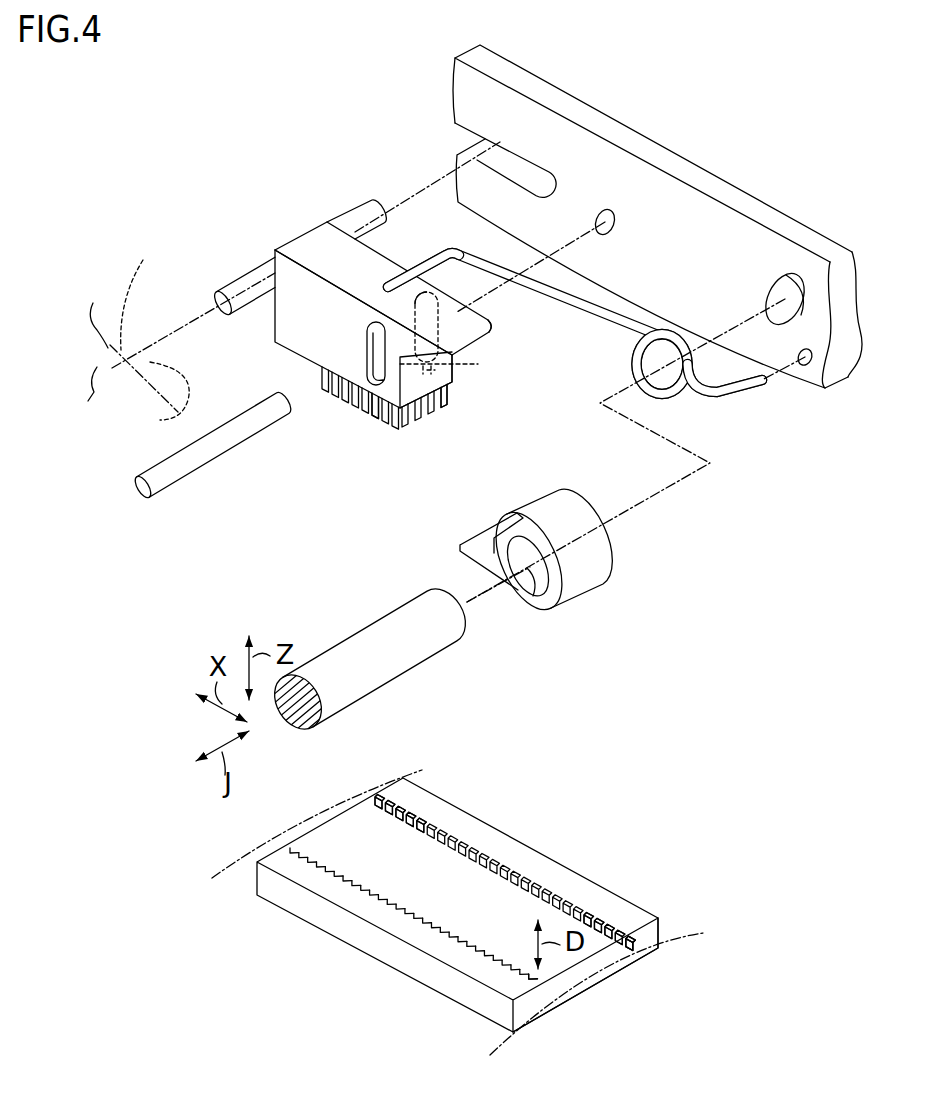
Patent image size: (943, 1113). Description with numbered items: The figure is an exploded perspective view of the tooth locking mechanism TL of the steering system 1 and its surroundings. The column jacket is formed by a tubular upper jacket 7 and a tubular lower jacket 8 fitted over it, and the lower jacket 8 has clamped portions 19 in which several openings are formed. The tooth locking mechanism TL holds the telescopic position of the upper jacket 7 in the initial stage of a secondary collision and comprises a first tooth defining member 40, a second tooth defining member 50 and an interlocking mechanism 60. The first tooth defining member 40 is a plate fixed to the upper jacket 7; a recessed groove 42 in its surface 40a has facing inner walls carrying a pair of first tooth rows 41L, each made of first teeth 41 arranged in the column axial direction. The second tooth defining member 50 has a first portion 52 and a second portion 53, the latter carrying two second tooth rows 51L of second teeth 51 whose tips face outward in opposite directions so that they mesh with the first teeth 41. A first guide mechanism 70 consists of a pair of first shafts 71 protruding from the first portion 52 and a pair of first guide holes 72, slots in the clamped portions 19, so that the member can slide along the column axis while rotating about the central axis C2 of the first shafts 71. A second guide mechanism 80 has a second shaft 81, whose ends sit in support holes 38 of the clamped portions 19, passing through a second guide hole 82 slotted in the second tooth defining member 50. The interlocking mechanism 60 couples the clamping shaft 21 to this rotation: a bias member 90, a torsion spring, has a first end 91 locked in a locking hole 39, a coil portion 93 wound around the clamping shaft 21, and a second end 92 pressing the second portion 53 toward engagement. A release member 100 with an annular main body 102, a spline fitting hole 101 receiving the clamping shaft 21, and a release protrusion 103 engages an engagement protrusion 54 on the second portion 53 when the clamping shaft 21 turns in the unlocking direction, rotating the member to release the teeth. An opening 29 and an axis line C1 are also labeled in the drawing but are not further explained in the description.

The steering system 1 is at (657, 211).
The lower jacket 8 is at (705, 146).
The clamped portions 19 is at (745, 189).
The support holes 38 is at (598, 218).
The hole 29 is at (767, 295).
The locking hole 39 is at (803, 367).
The first guide mechanism 70 is at (303, 131).
The first shafts 71 is at (365, 210).
The first guide holes 72 is at (468, 143).
The second tooth defining member 50 is at (407, 327).
The first portion 52 is at (292, 246).
The second end 92 is at (388, 280).
The engagement protrusion 54 is at (482, 335).
The second teeth 51 is at (335, 430).
The second tooth rows 51L is at (454, 392).
The second portion 53 is at (417, 384).
The second guide mechanism 80 is at (258, 411).
The second guide hole 82 is at (366, 335).
The second shaft 81 is at (211, 432).
The bias member 90 is at (553, 351).
The coil portion 93 is at (665, 400).
The first end 91 is at (757, 392).
The interlocking mechanism 60 is at (553, 448).
The release member 100 is at (504, 545).
The release protrusion 103 is at (468, 542).
The fitting hole 101 is at (536, 582).
The main body 102 is at (585, 570).
The clamping shaft 21 is at (357, 645).
The first tooth defining member 40 is at (462, 902).
The recessed groove 42 is at (483, 900).
The first teeth 41 is at (415, 908).
The surface 40a is at (623, 917).
The first tooth rows 41L is at (628, 950).
The upper jacket 7 is at (257, 842).
The tooth locking mechanism TL is at (237, 161).
The axis of roller C1 is at (462, 598).
The central axis C2 is at (153, 395).